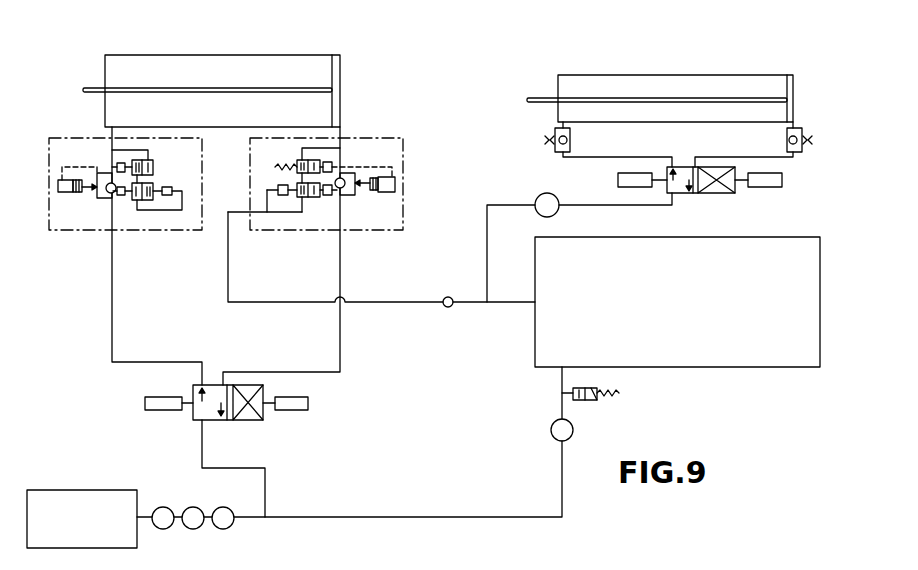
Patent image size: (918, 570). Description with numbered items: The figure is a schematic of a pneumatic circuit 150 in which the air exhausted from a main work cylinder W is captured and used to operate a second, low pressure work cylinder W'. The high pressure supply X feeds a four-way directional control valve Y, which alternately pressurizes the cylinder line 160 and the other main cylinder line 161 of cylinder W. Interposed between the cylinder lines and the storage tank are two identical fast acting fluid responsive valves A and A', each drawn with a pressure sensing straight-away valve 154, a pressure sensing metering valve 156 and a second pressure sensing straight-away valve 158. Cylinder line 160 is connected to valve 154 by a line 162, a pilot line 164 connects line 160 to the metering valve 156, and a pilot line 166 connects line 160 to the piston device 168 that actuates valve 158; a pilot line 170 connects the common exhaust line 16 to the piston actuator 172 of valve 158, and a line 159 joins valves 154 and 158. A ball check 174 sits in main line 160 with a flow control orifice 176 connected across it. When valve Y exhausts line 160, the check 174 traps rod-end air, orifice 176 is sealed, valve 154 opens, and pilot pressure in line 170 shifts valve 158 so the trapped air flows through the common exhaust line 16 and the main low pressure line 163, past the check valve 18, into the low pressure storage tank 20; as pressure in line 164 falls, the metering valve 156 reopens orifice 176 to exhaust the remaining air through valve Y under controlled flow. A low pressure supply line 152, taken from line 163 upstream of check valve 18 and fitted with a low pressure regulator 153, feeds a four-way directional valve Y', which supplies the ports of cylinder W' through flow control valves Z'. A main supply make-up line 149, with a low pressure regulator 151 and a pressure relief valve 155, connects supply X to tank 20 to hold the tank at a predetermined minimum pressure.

The low pressure line 16 is at (240, 213).
The check valve 18 is at (452, 305).
The low pressure storage tank 20 is at (723, 367).
The main supply make-up line 149 is at (407, 518).
The pneumatic circuit 150 is at (133, 406).
The low pressure regulator 151 is at (551, 430).
The low pressure supply line 152 is at (587, 207).
The low pressure regulator 153 is at (540, 194).
The pressure sensing straight-away valve 154 is at (153, 170).
The pressure relief valve 155 is at (592, 400).
The pressure sensing metering valve 156 is at (73, 193).
The pressure sensing straight-away valve 158 is at (148, 200).
The line 159 is at (153, 186).
The cylinder line 160 is at (112, 130).
The main cylinder line 161 is at (257, 372).
The line 162 is at (149, 149).
The main low pressure line 163 is at (412, 302).
The pilot line 164 is at (78, 167).
The pilot line 166 is at (115, 197).
The piston device 168 is at (122, 198).
The pilot line 170 is at (182, 208).
The piston actuator 172 is at (173, 191).
The ball check 174 is at (110, 193).
The flow control orifice 176 is at (95, 186).
The work cylinder W is at (211, 76).
The secondary work cylinder W' is at (660, 73).
The fast acting fluid responsive valve A is at (116, 201).
The fast acting fluid responsive valve A' is at (326, 201).
The flow control valves Z' is at (672, 140).
The four-way directional control valve Y is at (230, 394).
The four-way directional valve Y' is at (700, 195).
The pressure supply X is at (113, 491).